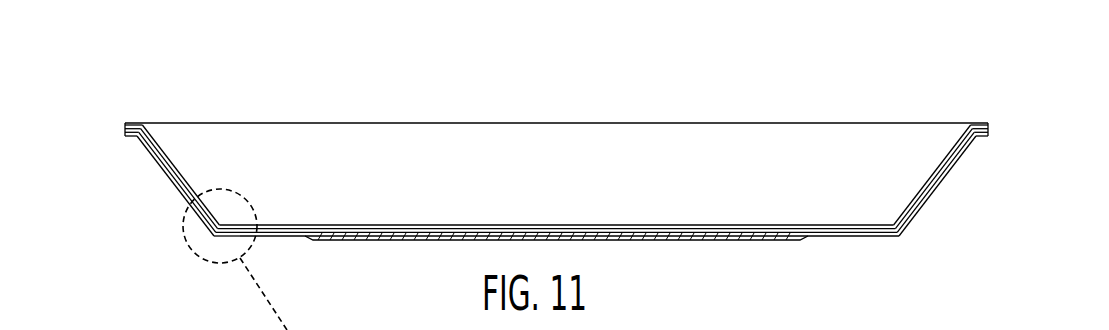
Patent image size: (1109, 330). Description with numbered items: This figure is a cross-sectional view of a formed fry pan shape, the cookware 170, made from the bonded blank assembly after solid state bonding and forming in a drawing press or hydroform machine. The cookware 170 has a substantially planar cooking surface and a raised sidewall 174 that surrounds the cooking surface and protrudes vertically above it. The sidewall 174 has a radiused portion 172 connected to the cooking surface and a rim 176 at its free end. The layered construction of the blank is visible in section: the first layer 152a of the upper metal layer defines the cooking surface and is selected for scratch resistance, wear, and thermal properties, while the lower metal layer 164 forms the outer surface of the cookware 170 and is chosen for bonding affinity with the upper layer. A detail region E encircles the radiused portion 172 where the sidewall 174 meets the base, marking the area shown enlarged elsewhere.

The cookware 170 is at (745, 92).
The rim 176 is at (125, 128).
The sidewall 174 is at (175, 188).
The first layer 152a is at (258, 225).
The lower metal layer 164 is at (267, 238).
The radiused portion 172 is at (217, 238).
The detail region E is at (235, 247).